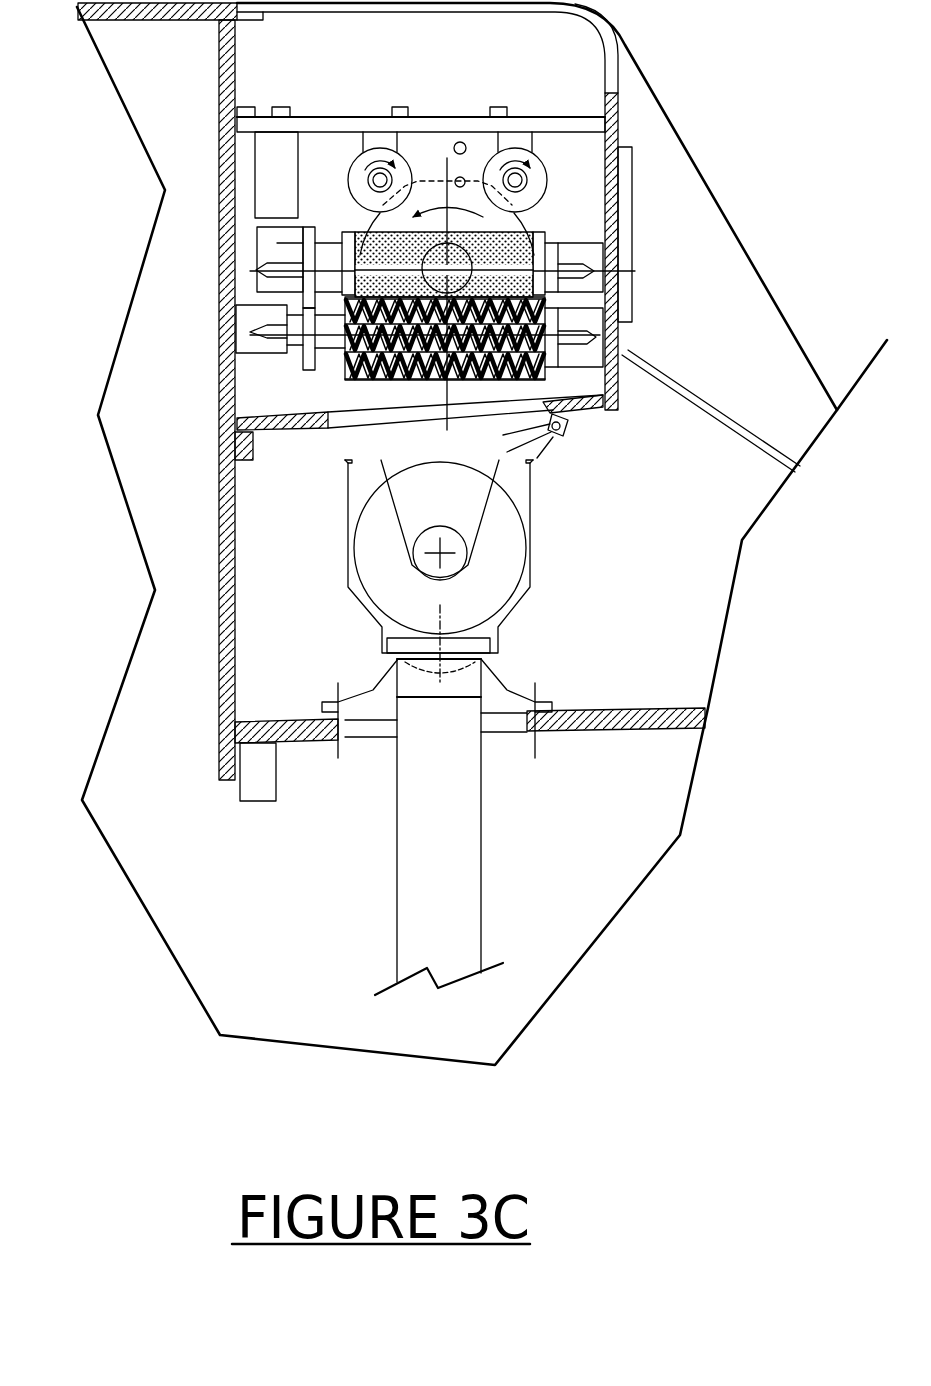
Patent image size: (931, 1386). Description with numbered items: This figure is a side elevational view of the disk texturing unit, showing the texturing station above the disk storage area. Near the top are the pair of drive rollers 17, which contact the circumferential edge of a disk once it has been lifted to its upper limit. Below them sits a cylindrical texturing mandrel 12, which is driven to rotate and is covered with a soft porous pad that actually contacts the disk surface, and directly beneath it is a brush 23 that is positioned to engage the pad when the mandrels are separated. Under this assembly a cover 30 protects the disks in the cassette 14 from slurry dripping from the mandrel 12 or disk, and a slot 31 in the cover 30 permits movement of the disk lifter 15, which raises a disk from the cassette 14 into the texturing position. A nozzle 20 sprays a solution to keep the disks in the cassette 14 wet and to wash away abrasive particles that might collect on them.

The cylindrical texturing mandrel 12 is at (522, 215).
The cassette 14 is at (530, 498).
The disk lifter 15 is at (483, 815).
The drive roller 17 is at (405, 165).
The nozzle 20 is at (590, 417).
The brush 23 is at (358, 340).
The cover 30 is at (300, 417).
The slot 31 is at (392, 413).